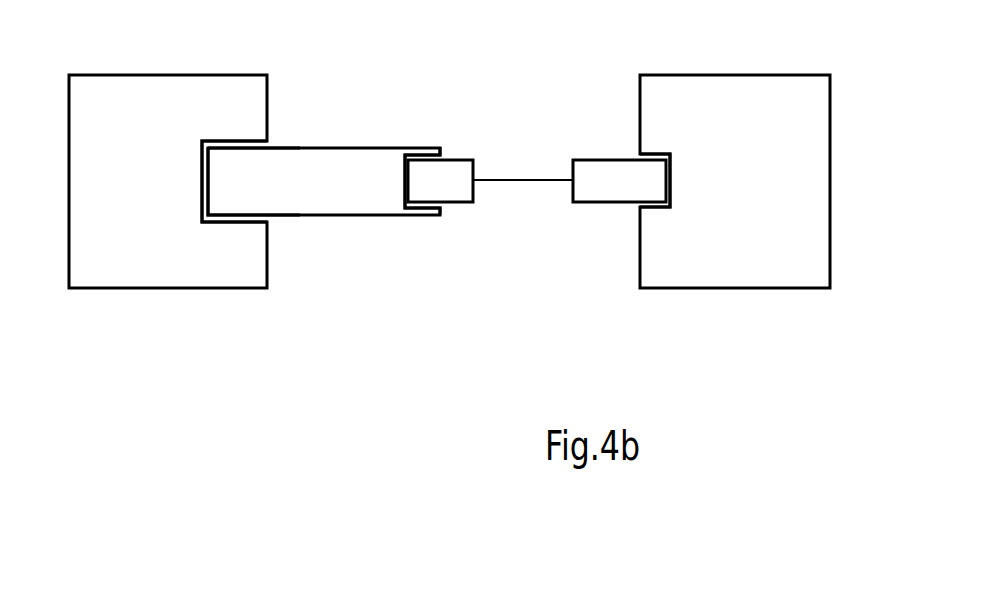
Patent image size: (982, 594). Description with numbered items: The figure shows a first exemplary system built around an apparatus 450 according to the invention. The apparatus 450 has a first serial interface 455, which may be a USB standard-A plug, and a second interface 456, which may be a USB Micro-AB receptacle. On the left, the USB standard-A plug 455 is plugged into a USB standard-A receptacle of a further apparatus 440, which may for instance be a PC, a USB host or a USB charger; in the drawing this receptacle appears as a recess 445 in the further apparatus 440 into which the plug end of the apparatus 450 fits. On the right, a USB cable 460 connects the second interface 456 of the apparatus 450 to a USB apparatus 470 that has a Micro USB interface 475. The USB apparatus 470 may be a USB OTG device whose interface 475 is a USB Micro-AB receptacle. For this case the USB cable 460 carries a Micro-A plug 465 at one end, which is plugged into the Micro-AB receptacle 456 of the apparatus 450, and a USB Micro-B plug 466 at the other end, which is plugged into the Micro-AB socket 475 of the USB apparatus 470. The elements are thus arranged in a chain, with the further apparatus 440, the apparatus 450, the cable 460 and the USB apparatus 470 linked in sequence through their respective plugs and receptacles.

The further apparatus 440 is at (135, 290).
The recess in first body 445 is at (235, 141).
The apparatus 450 is at (352, 216).
The first serial interface 455 is at (237, 202).
The second interface 456 is at (422, 155).
The USB cable 460 is at (528, 180).
The Micro-A plug 465 is at (463, 203).
The USB Micro-B plug 466 is at (602, 203).
The USB apparatus 470 is at (777, 290).
The Micro USB interface 475 is at (657, 153).